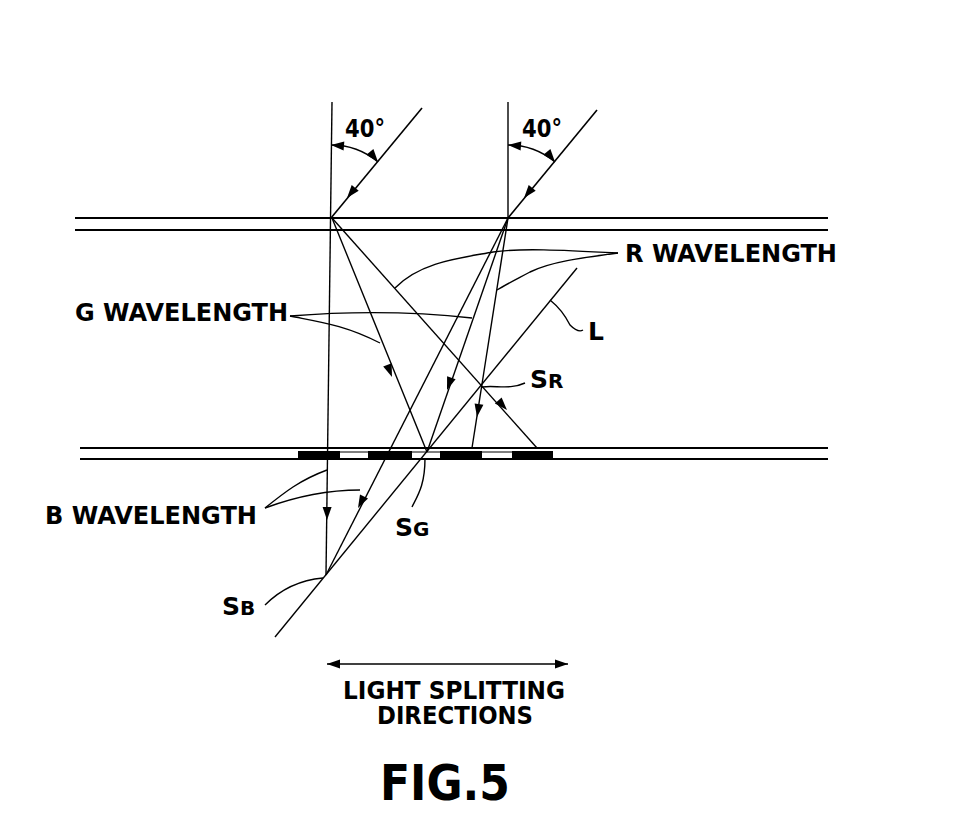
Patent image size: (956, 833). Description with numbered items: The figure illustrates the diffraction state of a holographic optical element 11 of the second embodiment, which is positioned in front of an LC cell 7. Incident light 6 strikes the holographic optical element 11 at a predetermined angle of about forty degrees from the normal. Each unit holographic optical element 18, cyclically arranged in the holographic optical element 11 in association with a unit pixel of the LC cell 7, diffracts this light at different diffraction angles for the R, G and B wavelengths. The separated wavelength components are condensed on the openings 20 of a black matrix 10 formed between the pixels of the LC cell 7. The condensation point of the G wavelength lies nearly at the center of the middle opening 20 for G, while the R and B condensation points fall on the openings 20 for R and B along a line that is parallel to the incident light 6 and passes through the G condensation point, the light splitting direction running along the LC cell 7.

The incident light 6 is at (447, 55).
The LC cell 7 is at (755, 445).
The black matrix 10 is at (307, 447).
The holographic optical element 11 is at (755, 215).
The unit holographic optical element 18 is at (423, 217).
The openings 20 is at (352, 448).